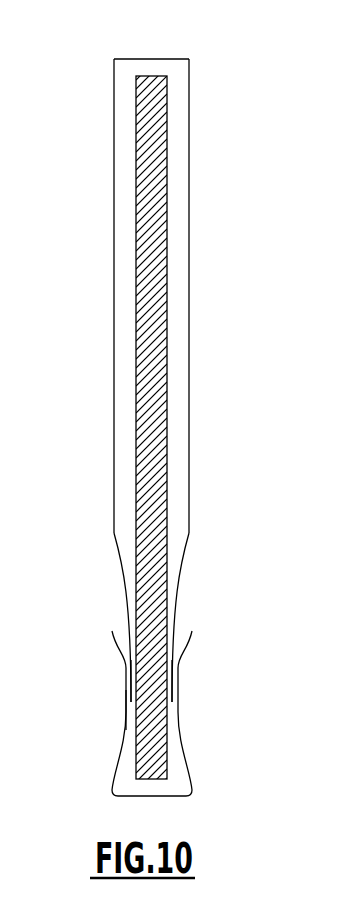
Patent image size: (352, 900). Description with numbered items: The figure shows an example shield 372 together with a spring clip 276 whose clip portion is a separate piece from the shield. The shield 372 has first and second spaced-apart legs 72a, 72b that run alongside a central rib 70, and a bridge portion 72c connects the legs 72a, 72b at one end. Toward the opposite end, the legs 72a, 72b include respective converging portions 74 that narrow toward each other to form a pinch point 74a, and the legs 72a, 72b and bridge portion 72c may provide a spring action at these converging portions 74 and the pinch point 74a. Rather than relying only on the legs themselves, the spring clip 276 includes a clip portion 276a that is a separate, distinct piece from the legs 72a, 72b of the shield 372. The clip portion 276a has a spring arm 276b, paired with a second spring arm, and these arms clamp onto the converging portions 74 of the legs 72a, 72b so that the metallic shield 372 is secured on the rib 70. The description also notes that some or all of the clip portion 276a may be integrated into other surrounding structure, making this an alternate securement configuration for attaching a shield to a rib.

The shield 372 is at (206, 311).
The rib 70 is at (167, 193).
The first leg 72a is at (189, 241).
The second leg 72b is at (113, 282).
The bridge portion 72c is at (137, 59).
The converging portions 74 is at (107, 585).
The pinch point 74a is at (109, 679).
The spring clip 276 is at (252, 805).
The clip portion 276a is at (177, 708).
The spring arm 276b is at (125, 710).